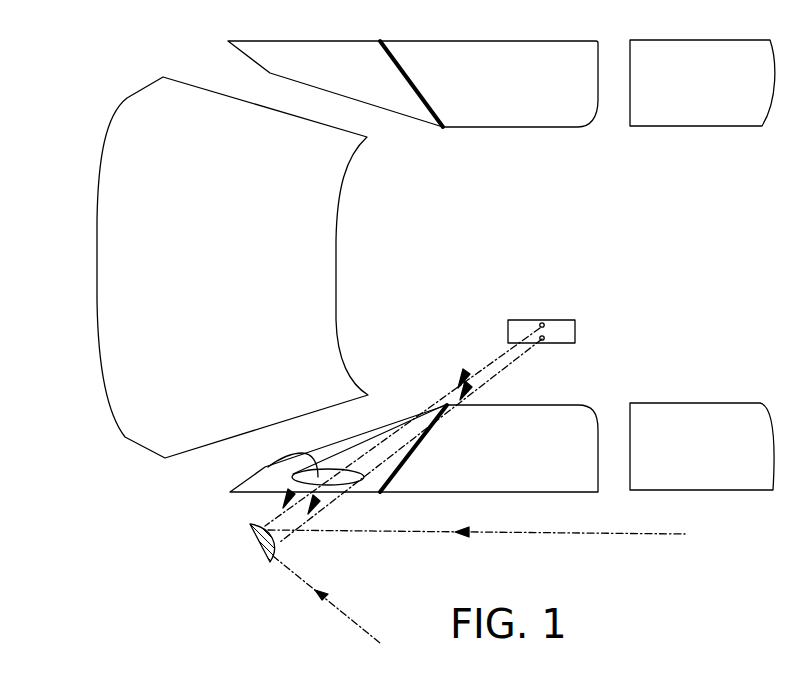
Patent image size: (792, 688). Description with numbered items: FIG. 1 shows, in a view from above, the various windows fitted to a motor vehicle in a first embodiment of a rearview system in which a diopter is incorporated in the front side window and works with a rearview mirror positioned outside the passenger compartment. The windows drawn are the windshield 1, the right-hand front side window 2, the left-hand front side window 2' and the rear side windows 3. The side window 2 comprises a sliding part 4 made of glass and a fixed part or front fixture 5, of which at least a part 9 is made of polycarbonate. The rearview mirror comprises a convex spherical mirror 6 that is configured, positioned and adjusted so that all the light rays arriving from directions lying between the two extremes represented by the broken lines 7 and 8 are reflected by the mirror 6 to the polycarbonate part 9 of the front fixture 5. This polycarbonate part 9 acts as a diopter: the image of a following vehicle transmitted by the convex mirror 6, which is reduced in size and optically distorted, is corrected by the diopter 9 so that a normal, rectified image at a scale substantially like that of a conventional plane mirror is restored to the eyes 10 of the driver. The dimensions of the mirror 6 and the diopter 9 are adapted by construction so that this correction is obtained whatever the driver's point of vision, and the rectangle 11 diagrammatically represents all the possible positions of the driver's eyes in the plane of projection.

The windshield 1 is at (258, 272).
The right-hand front side window 2 is at (422, 426).
The left-hand front side window 2' is at (413, 108).
The rear side windows 3 is at (713, 97).
The sliding part 4 is at (528, 464).
The front fixture 5 is at (330, 455).
The convex spherical mirror 6 is at (256, 538).
The broken line 7 is at (336, 599).
The broken line 8 is at (542, 534).
The polycarbonate part 9 is at (302, 453).
The eyes of the driver 10 is at (542, 323).
The rectangle 11 is at (575, 327).